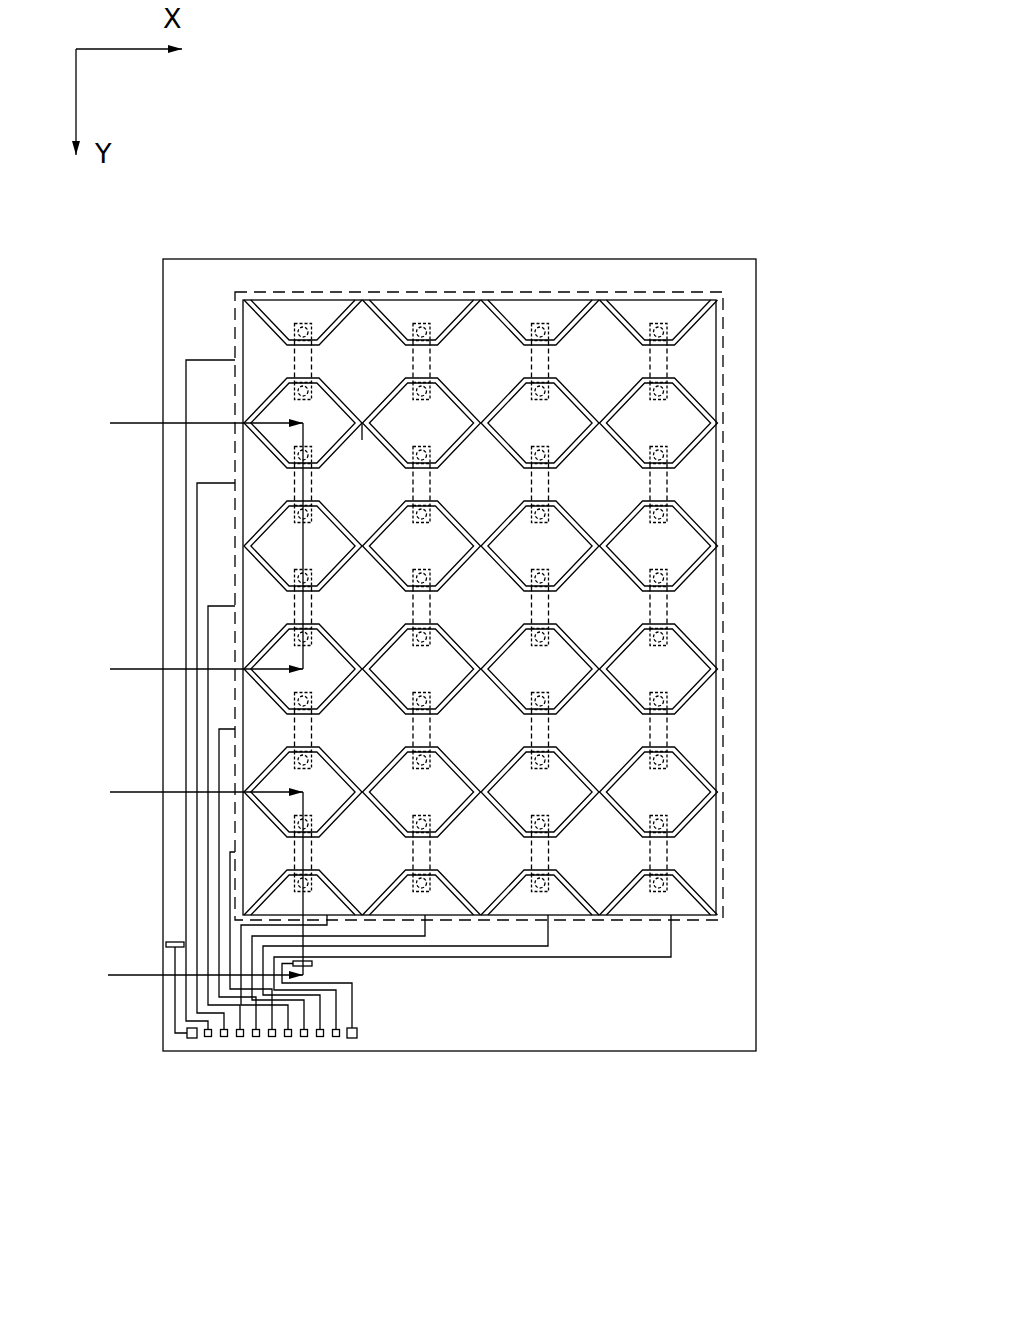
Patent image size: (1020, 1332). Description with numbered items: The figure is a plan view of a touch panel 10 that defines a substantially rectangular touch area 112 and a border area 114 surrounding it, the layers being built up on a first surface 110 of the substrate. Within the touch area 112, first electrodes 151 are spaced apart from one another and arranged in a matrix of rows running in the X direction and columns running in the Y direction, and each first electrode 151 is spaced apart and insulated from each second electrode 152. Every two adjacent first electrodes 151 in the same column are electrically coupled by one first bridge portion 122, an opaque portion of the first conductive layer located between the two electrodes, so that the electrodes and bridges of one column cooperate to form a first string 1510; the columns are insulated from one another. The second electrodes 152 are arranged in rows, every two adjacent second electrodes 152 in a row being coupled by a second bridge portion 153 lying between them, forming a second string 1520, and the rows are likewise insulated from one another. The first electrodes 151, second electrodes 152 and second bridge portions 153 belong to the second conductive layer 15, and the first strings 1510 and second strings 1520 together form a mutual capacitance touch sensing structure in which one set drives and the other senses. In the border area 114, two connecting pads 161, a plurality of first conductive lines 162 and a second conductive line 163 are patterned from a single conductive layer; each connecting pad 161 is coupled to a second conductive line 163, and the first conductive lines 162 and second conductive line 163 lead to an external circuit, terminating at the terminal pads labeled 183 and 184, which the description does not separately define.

The touch panel 10 is at (447, 202).
The first surface 110 is at (740, 413).
The touch area 112 is at (570, 292).
The border area 114 is at (707, 273).
The first bridge portion 122 is at (670, 483).
The second conductive layer 15 is at (843, 600).
The first electrode 151 is at (675, 665).
The second electrode 152 is at (593, 723).
The second bridge portion 153 is at (672, 608).
The first string 1510 is at (682, 907).
The second string 1520 is at (692, 853).
The connecting pad 161 is at (166, 942).
The first conductive line 162 is at (505, 958).
The second conductive line 163 is at (353, 1006).
The first terminal 183 is at (347, 1038).
The second terminal 184 is at (272, 1038).